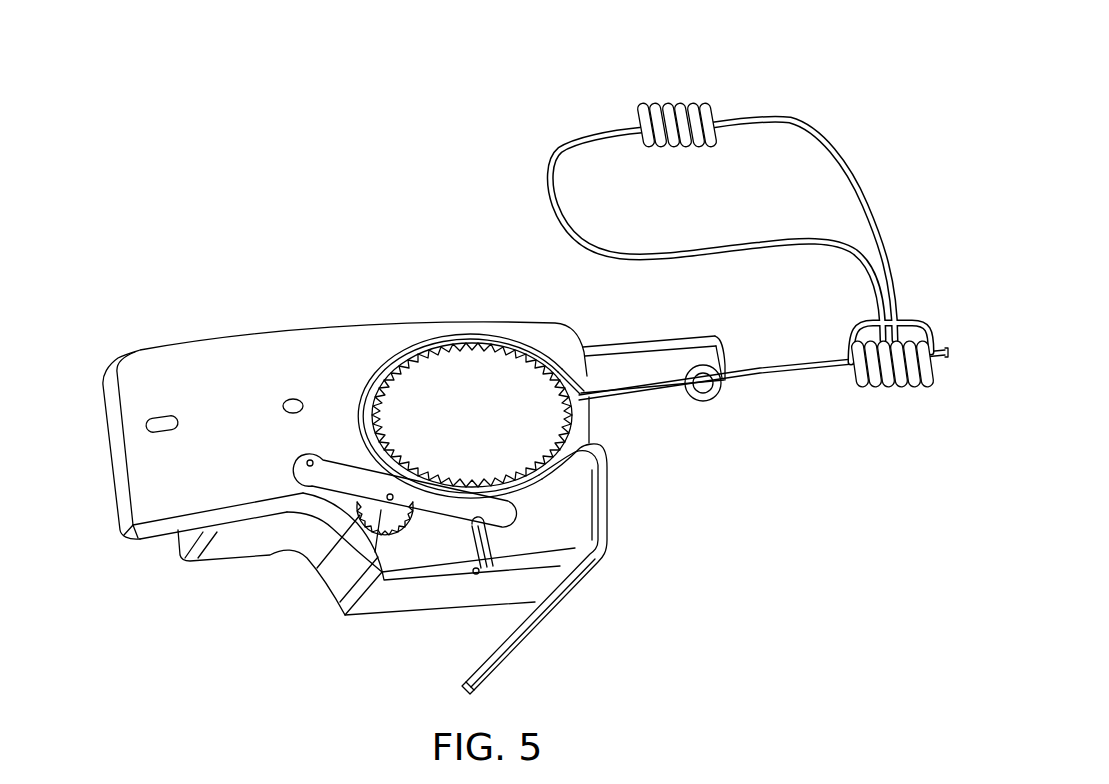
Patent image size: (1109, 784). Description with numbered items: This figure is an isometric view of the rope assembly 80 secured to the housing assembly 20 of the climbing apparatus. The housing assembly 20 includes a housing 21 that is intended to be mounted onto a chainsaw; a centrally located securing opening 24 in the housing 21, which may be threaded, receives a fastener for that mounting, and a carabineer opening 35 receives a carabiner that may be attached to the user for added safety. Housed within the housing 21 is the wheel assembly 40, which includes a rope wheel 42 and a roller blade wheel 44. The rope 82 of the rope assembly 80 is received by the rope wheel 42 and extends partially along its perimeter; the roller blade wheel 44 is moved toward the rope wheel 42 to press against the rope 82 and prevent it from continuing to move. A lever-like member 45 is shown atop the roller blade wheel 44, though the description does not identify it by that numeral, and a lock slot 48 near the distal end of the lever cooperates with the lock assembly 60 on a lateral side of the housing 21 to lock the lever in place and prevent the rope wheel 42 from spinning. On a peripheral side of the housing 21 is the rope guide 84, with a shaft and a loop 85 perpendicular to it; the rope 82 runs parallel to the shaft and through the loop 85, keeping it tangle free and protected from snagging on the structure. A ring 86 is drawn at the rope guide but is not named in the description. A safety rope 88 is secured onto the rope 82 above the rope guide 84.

The housing assembly 20 is at (310, 399).
The housing 21 is at (108, 470).
The securing opening 24 is at (291, 398).
The carabineer opening 35 is at (147, 427).
The wheel assembly 40 is at (494, 349).
The rope wheel 42 is at (450, 382).
The roller blade wheel 44 is at (343, 615).
The lever 45 is at (306, 490).
The lock slot 48 is at (477, 527).
The lock assembly 60 is at (491, 586).
The rope assembly 80 is at (749, 266).
The rope 82 is at (762, 389).
The rope guide 84 is at (693, 337).
The loop 85 is at (622, 350).
The eyelet ring 86 is at (706, 401).
The safety rope 88 is at (803, 124).